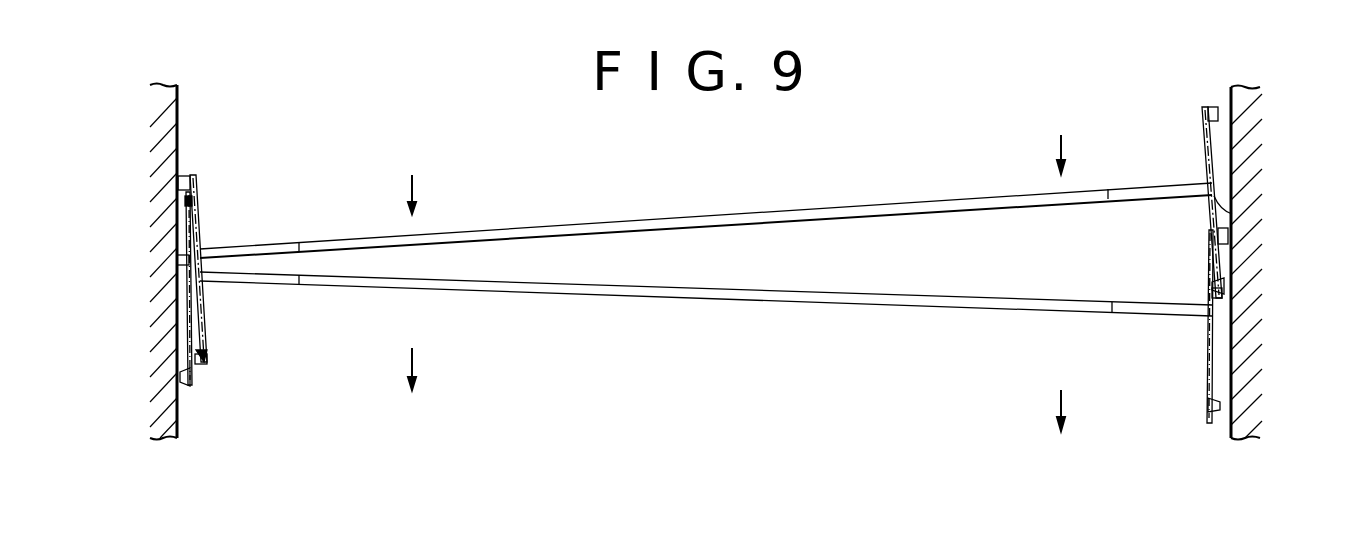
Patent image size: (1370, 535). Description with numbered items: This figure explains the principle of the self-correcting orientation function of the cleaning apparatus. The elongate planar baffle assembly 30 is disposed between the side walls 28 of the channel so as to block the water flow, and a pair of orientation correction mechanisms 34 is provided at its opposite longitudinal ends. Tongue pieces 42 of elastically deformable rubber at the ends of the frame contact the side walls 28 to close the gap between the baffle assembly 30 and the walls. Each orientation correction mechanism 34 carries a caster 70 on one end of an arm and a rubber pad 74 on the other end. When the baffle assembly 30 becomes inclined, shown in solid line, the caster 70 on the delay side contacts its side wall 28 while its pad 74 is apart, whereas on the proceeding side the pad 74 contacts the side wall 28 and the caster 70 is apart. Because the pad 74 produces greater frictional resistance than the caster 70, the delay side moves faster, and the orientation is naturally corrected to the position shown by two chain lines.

The side wall 28 is at (163, 393).
The baffle assembly 30 is at (928, 196).
The orientation correction mechanism 34 is at (200, 188).
The tongue piece 42 is at (200, 262).
The caster 70 is at (200, 358).
The rubber pad 74 is at (180, 183).